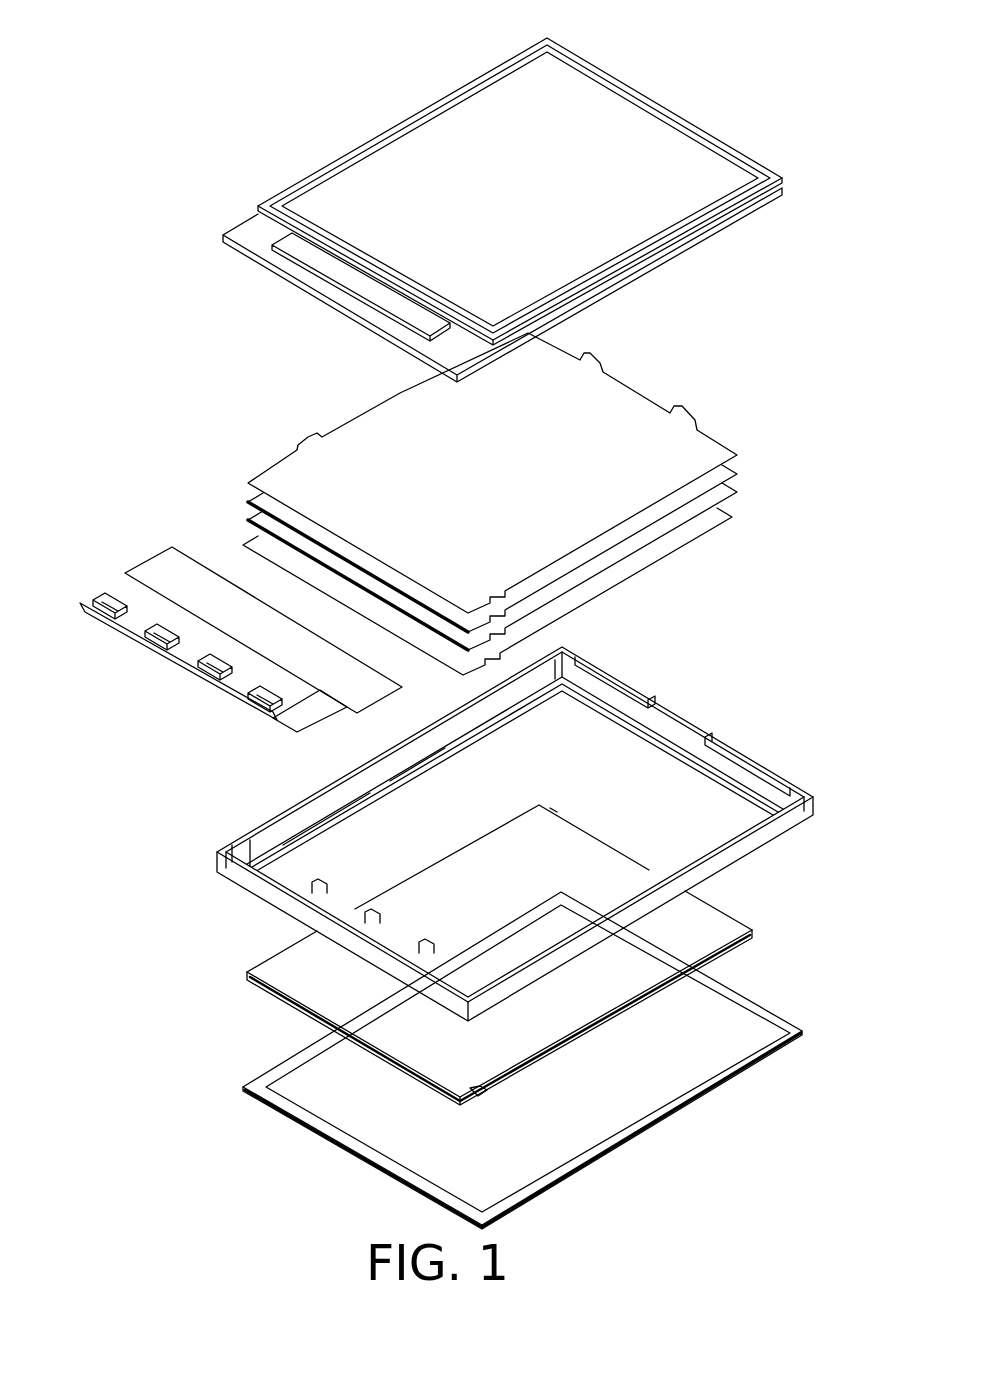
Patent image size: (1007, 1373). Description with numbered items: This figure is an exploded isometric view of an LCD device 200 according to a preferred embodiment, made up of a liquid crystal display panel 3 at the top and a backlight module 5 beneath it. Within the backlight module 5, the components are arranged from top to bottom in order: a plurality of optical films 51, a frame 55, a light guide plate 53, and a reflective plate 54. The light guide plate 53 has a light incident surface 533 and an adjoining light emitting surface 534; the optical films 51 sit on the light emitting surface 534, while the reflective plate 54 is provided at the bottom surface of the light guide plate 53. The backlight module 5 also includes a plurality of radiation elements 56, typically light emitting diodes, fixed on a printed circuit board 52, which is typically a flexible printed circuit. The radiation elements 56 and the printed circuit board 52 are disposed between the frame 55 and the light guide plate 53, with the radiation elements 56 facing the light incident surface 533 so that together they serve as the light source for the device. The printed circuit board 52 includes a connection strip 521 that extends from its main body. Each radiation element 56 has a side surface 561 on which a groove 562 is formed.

The LCD device 200 is at (441, 37).
The liquid crystal display panel 3 is at (660, 157).
The backlight module 5 is at (825, 432).
The optical films 51 is at (750, 438).
The printed circuit board 52 is at (188, 572).
The connection strip 521 is at (307, 720).
The light guide plate 53 is at (757, 958).
The light incident surface 533 is at (266, 990).
The light emitting surface 534 is at (707, 922).
The reflective plate 54 is at (732, 1018).
The frame 55 is at (673, 735).
The radiation elements 56 is at (172, 668).
The side surface 561 is at (93, 602).
The groove 562 is at (103, 597).